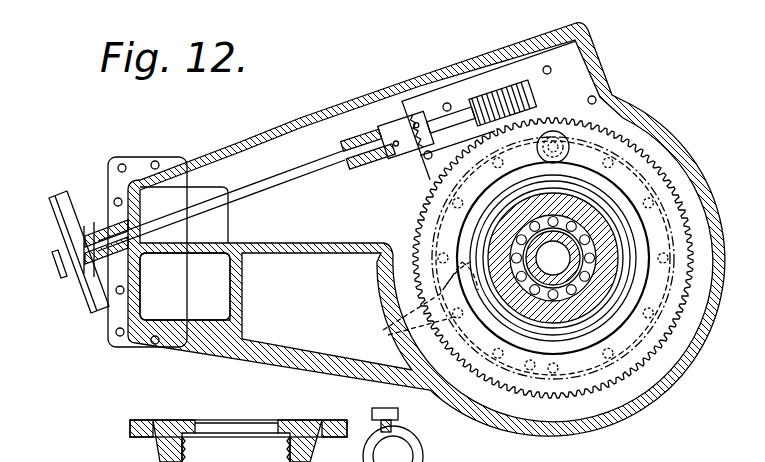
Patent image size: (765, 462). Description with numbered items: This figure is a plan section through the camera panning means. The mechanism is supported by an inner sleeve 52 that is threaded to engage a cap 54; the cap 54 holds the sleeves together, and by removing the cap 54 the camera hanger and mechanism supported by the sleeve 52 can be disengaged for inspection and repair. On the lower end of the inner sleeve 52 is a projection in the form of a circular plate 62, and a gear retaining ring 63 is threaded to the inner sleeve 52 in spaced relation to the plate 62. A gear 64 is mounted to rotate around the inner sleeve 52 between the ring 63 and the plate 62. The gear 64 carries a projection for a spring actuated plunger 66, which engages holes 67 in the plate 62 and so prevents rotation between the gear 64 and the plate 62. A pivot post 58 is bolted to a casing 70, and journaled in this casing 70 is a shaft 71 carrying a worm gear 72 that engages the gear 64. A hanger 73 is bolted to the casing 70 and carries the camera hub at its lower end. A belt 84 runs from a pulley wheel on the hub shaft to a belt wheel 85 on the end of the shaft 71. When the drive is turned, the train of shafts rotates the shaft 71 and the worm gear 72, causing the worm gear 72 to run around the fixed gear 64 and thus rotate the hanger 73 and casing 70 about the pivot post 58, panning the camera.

The inner sleeve 52 is at (595, 217).
The cap 54 is at (162, 444).
The pivot post 58 is at (549, 238).
The circular plate 62 is at (525, 368).
The gear retaining ring 63 is at (625, 237).
The gear 64 is at (622, 382).
The spring actuated plunger 66 is at (567, 147).
The holes 67 is at (419, 303).
The casing 70 is at (682, 373).
The shaft 71 is at (311, 178).
The worm gear 72 is at (487, 100).
The hanger 73 is at (232, 288).
The belt 84 is at (55, 203).
The belt wheel 85 is at (73, 300).